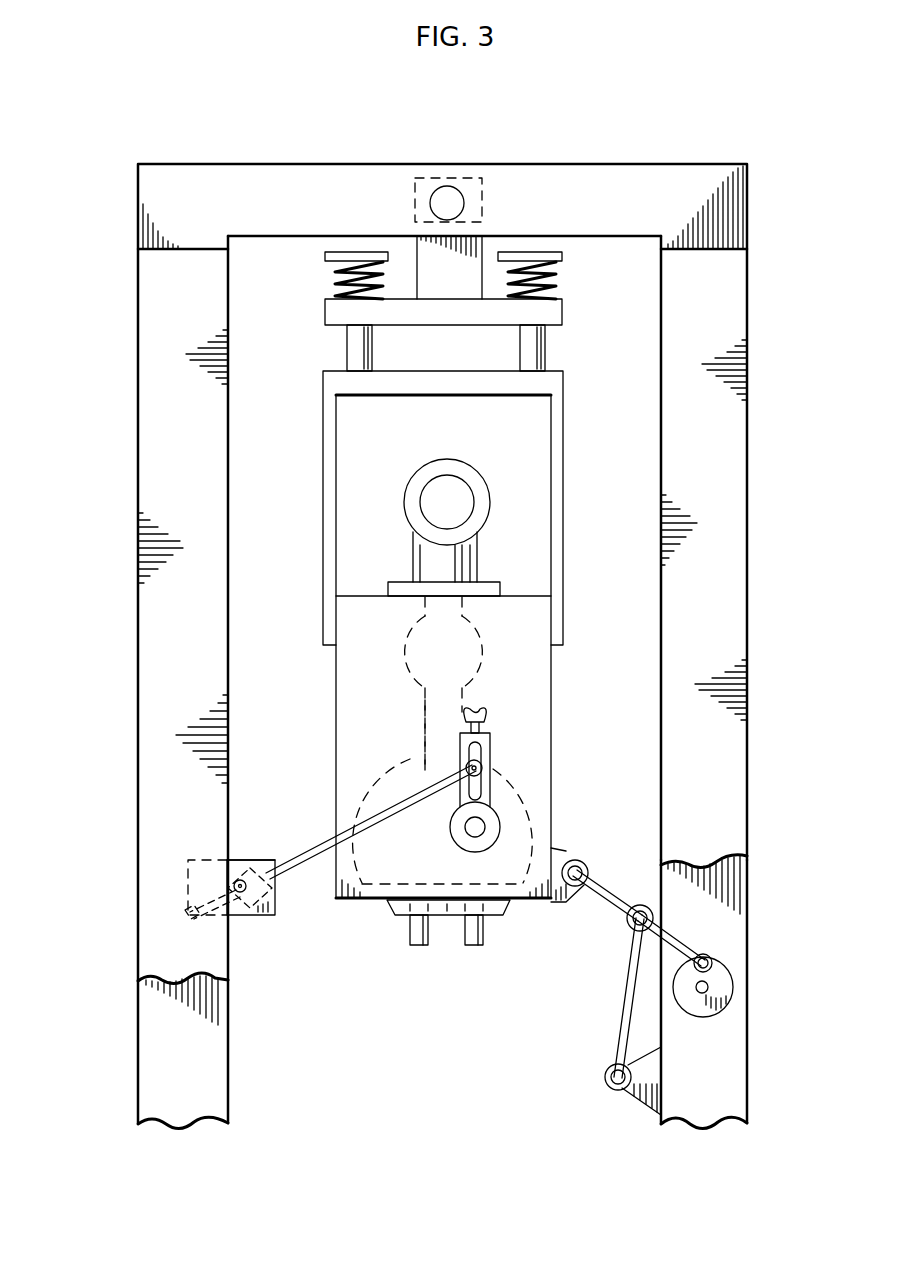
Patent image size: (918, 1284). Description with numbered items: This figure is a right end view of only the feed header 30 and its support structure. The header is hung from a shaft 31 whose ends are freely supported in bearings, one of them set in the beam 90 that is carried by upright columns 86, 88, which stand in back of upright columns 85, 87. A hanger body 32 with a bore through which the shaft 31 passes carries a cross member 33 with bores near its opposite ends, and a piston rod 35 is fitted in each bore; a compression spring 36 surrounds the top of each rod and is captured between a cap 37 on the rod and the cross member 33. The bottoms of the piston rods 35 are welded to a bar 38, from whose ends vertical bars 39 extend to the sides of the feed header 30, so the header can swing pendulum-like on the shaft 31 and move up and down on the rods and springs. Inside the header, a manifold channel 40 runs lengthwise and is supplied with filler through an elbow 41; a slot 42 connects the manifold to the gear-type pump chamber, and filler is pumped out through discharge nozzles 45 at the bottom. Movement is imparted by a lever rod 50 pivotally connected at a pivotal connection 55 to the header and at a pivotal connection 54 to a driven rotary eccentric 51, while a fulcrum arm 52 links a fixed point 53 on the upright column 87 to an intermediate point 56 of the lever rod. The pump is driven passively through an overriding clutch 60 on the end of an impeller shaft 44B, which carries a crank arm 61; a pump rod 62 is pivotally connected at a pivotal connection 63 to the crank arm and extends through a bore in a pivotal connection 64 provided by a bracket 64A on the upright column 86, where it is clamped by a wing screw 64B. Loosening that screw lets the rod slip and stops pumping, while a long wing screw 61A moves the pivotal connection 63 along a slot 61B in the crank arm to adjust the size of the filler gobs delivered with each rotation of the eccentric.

The feed header 30 is at (324, 727).
The shaft 31 is at (447, 197).
The hanger body 32 is at (462, 267).
The cross member 33 is at (556, 320).
The piston rod 35 is at (352, 338).
The compression spring 36 is at (340, 276).
The cap 37 is at (563, 257).
The bar 38 is at (440, 385).
The vertical bar 39 is at (562, 480).
The manifold channel 40 is at (480, 672).
The elbow 41 is at (462, 467).
The slot 42 is at (428, 710).
The shaft of pump impeller 44B is at (485, 837).
The discharge nozzle 45 is at (468, 940).
The lever rod 50 is at (606, 898).
The driven rotary eccentric 51 is at (730, 982).
The fulcrum arm 52 is at (628, 985).
The fixed point 53 is at (612, 1085).
The pivotal connection 54 is at (713, 960).
The pivotal connection 55 is at (582, 862).
The intermediate point 56 is at (637, 905).
The overriding clutch 60 is at (460, 832).
The crank arm 61 is at (497, 742).
The wing screw 61A is at (488, 713).
The slot 61B is at (467, 747).
The pump rod 62 is at (313, 847).
The pivotal connection 63 is at (487, 768).
The pivotal connection 64 is at (273, 900).
The bracket 64A is at (263, 858).
The wing screw 64B is at (240, 893).
The upright column 85 is at (215, 1065).
The upright column 86 is at (150, 428).
The upright column 87 is at (722, 1082).
The upright column 88 is at (730, 462).
The beam 90 is at (733, 218).